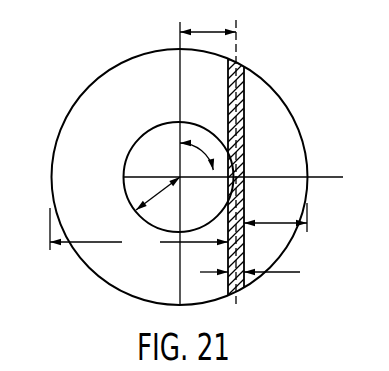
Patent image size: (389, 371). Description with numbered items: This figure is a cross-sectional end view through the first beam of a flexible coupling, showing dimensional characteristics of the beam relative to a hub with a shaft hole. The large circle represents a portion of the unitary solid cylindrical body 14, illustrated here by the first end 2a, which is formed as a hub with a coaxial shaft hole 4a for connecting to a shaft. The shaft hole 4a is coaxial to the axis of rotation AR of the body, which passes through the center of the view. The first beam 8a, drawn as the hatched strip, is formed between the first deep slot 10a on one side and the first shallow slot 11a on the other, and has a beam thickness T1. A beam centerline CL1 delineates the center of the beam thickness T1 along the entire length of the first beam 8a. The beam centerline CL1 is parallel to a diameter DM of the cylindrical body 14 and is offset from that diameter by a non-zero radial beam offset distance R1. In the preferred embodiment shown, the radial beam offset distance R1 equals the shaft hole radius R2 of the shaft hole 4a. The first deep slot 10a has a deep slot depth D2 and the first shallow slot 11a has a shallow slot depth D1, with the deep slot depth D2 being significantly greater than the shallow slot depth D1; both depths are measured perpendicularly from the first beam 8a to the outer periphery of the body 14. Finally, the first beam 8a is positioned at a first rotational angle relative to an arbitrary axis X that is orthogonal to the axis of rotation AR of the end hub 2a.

The first deep slot 10a is at (116, 78).
The diameter DM is at (177, 63).
The radial beam offset distance R1 is at (208, 21).
The beam centerline CL1 is at (238, 49).
The first end 2a is at (272, 88).
The first shallow slot 11a is at (270, 117).
The cylindrical body 14 is at (330, 151).
The axis x X is at (241, 179).
The axis of rotation AR is at (180, 177).
The shaft hole radius R2 is at (140, 205).
The shaft hole 4a is at (212, 214).
The shallow slot depth D1 is at (275, 213).
The deep slot depth D2 is at (139, 232).
The first beam 8a is at (246, 257).
The beam thickness T1 is at (262, 271).